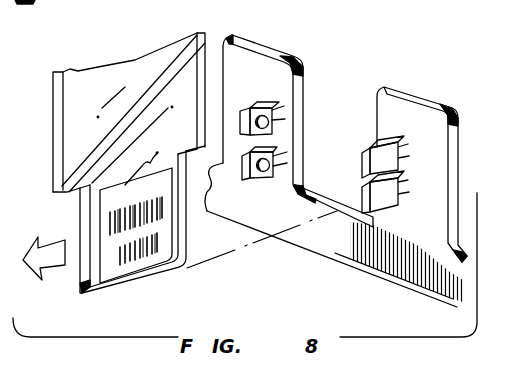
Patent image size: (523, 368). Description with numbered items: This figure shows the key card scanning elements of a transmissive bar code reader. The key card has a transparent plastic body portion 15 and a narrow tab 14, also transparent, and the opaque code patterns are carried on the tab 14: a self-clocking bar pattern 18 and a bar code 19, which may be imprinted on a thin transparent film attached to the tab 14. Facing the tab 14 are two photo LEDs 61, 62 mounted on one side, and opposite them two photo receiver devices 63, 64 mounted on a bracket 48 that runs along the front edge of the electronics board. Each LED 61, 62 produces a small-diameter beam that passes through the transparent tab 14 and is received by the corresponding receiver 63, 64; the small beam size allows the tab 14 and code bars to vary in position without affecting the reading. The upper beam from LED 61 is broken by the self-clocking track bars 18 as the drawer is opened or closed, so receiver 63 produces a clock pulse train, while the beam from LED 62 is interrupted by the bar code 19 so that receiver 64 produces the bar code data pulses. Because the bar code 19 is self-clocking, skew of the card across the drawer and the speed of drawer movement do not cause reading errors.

The narrow tab 14 is at (158, 268).
The body portion 15 is at (135, 80).
The self-clocking bar pattern 18 is at (110, 230).
The bar code 19 is at (152, 245).
The bracket 48 is at (390, 113).
The photo LED 61 is at (258, 102).
The photo LED 62 is at (260, 180).
The photo receiver device 63 is at (388, 155).
The photo receiver device 64 is at (385, 203).